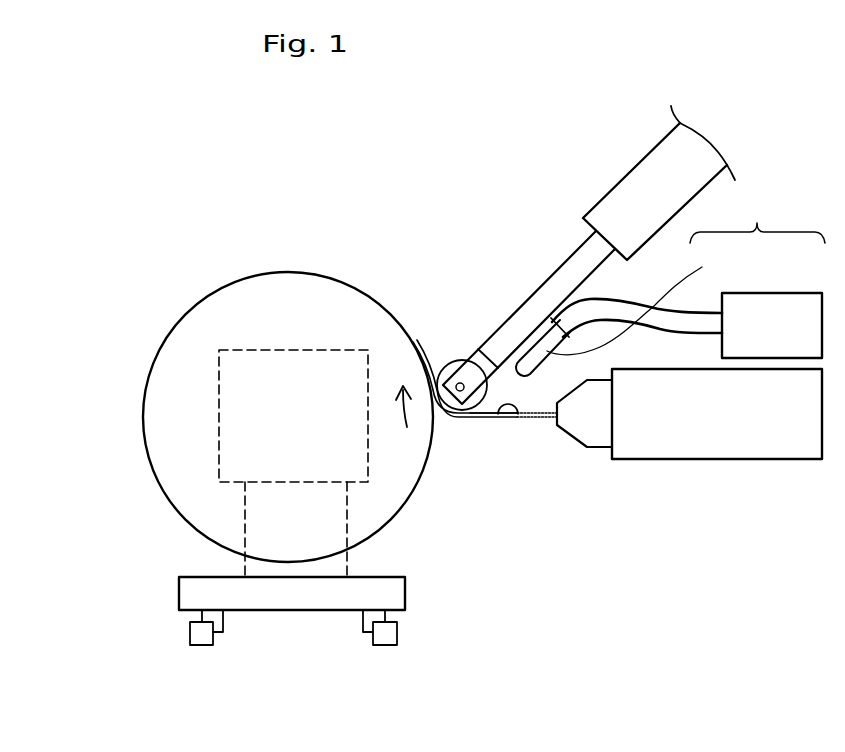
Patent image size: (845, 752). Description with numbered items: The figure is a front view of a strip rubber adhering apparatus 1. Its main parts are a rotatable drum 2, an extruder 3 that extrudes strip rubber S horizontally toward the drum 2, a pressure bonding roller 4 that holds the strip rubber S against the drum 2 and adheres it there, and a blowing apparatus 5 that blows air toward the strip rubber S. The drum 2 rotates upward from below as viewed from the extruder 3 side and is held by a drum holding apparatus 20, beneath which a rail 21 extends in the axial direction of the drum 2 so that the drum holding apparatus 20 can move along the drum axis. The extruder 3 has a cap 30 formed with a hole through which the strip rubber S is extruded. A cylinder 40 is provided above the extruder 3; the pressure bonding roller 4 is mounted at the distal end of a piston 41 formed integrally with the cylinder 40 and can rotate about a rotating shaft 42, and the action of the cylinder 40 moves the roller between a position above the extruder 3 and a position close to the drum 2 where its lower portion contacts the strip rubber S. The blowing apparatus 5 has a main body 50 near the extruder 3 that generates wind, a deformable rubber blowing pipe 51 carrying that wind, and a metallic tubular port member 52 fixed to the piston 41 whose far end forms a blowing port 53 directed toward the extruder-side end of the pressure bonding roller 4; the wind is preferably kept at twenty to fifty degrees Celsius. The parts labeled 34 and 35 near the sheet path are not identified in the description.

The strip rubber adhering apparatus 1 is at (463, 163).
The drum 2 is at (193, 343).
The drum holding apparatus 20 is at (243, 423).
The rail 21 is at (198, 630).
The extruder 3 is at (778, 438).
The cap 30 is at (597, 440).
The guide projection 34 is at (517, 418).
The guide plate 35 is at (492, 418).
The strip rubber S is at (538, 423).
The pressure bonding roller 4 is at (458, 362).
The cylinder 40 is at (638, 180).
The piston 41 is at (573, 260).
The rotating shaft 42 is at (440, 366).
The blowing apparatus 5 is at (757, 218).
The main body 50 is at (782, 313).
The blowing pipe 51 is at (690, 323).
The port member 52 is at (636, 296).
The blowing port 53 is at (503, 362).